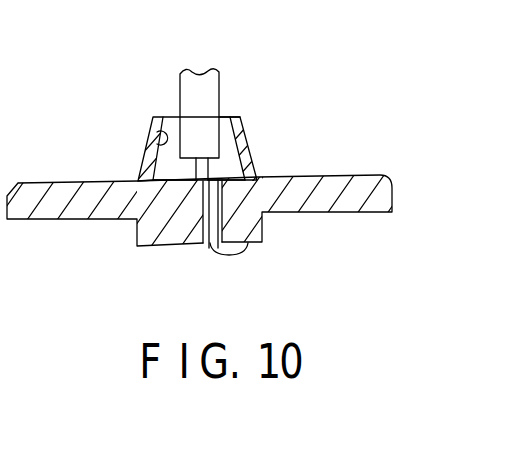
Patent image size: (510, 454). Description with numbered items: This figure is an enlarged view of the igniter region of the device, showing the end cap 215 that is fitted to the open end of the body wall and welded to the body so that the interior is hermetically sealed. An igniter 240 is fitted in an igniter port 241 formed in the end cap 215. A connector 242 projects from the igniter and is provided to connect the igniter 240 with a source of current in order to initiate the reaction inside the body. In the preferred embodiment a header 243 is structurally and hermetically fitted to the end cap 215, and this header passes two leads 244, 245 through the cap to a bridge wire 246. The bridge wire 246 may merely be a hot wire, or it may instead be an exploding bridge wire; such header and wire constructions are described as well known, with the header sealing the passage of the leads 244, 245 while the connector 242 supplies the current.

The end cap 215 is at (332, 213).
The igniter 240 is at (246, 133).
The igniter port 241 is at (157, 132).
The connector 242 is at (220, 74).
The header 243 is at (234, 117).
The lead 244 is at (193, 180).
The lead 245 is at (217, 173).
The bridge wire 246 is at (229, 256).